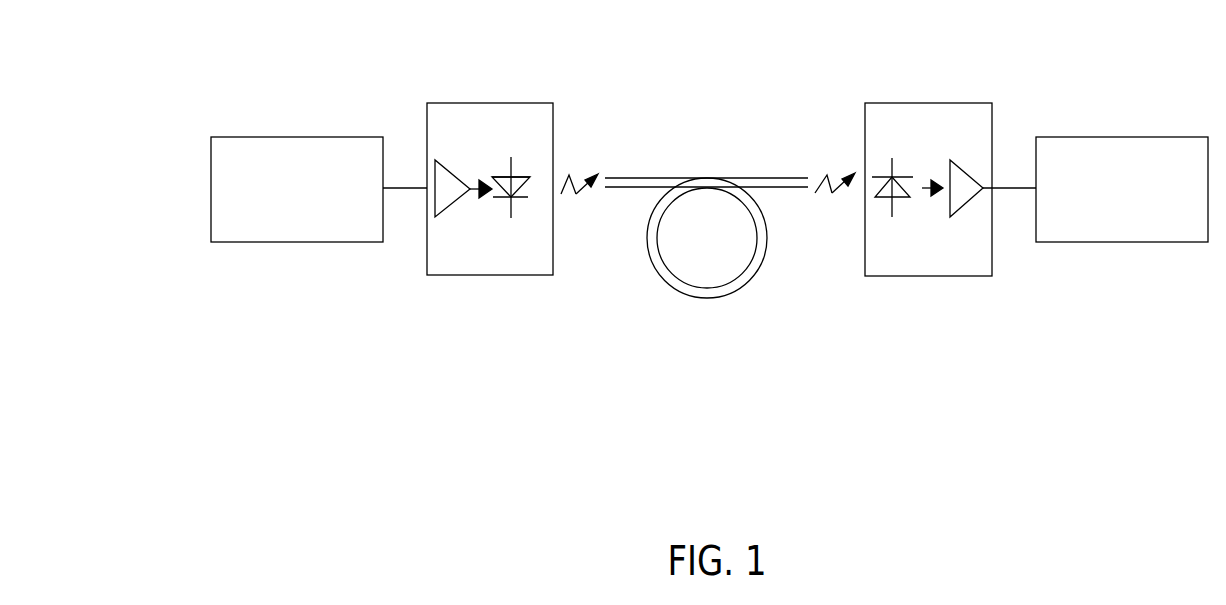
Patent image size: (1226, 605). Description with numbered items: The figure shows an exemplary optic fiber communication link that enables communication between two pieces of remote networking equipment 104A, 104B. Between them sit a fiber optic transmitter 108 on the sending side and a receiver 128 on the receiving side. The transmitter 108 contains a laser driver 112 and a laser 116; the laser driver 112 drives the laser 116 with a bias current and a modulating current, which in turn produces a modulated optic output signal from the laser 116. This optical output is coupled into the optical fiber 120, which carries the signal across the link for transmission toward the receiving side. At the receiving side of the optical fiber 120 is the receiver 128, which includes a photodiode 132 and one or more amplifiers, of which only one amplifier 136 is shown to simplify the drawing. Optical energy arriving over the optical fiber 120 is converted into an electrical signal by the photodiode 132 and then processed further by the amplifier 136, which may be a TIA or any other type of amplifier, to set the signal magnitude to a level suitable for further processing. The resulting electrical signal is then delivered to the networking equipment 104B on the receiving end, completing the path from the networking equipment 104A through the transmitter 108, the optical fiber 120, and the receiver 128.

The networking equipment 104A is at (256, 137).
The networking equipment 104B is at (1090, 137).
The transmitter 108 is at (553, 145).
The laser driver 112 is at (451, 204).
The laser 116 is at (524, 183).
The optical fiber 120 is at (697, 178).
The receiver 128 is at (992, 112).
The photodiode 132 is at (890, 200).
The amplifier 136 is at (965, 204).